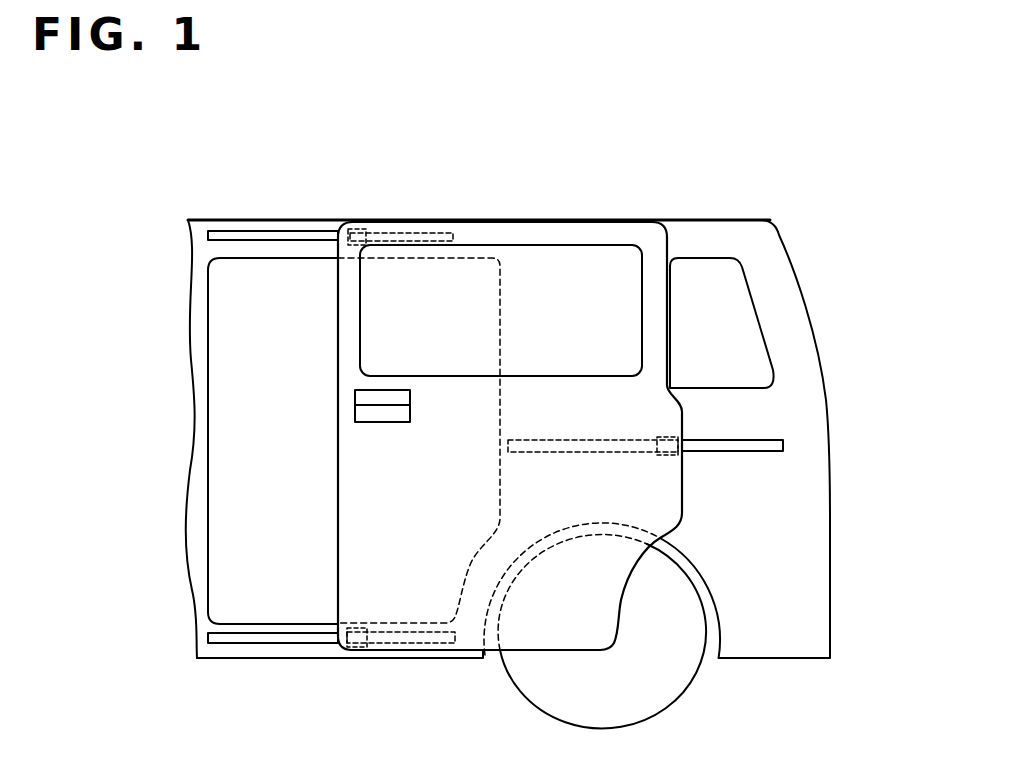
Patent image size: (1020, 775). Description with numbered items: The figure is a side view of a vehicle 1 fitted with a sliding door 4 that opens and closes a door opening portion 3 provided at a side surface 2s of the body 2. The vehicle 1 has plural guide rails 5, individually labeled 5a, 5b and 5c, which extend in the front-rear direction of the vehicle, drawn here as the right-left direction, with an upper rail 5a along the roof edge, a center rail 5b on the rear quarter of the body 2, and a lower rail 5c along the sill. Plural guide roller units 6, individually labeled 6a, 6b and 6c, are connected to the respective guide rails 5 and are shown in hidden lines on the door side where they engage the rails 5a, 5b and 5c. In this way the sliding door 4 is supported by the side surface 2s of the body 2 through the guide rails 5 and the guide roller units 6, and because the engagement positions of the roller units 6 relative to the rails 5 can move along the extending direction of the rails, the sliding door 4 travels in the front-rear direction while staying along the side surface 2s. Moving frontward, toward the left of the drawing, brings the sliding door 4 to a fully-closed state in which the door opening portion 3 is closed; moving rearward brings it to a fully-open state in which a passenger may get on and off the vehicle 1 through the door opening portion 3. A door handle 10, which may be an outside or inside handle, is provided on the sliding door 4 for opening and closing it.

The vehicle 1 is at (150, 152).
The body 2 is at (707, 218).
The side surface 2s is at (808, 328).
The door opening portion 3 is at (216, 468).
The sliding door 4 is at (338, 345).
The guide rails 5 is at (512, 403).
The guide rail 5a is at (237, 230).
The guide rail 5b is at (760, 440).
The guide rail 5c is at (250, 632).
The guide roller units 6 is at (512, 405).
The guide roller unit 6a is at (351, 228).
The guide roller unit 6b is at (663, 438).
The guide roller unit 6c is at (354, 628).
The door handle 10 is at (355, 390).